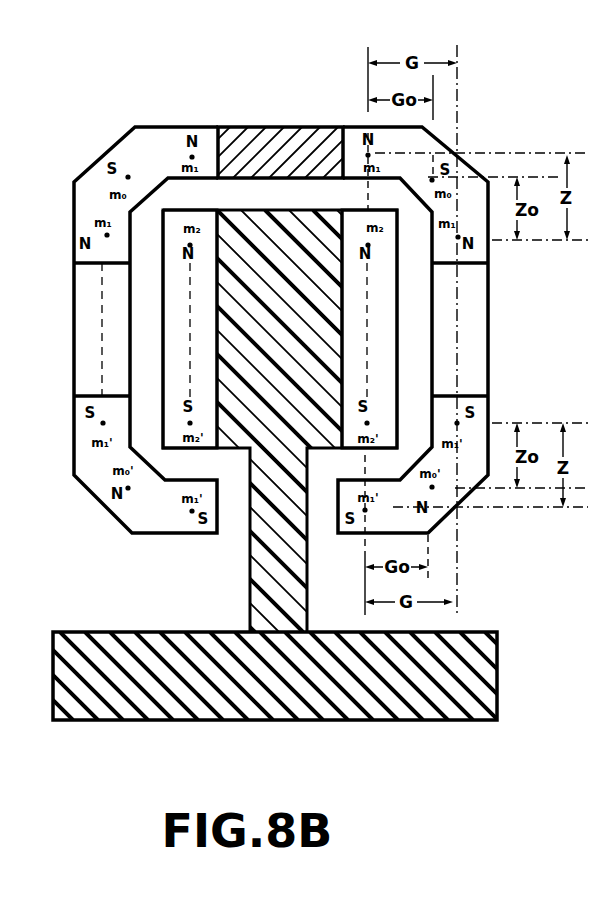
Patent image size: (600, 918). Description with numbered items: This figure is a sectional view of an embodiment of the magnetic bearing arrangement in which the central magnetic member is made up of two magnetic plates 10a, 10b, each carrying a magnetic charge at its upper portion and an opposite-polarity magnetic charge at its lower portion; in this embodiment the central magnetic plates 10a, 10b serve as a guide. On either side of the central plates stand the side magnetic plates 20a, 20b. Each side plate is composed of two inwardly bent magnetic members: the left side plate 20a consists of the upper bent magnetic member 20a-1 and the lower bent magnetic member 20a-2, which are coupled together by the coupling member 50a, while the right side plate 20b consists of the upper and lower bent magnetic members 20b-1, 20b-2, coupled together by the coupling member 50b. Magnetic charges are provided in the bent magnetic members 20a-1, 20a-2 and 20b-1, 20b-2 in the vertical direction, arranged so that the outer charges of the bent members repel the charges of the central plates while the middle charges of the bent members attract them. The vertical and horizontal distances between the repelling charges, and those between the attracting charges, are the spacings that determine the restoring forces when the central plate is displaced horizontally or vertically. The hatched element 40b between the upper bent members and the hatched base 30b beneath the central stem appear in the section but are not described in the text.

The magnetic plate 10a is at (145, 307).
The magnetic plate 10b is at (383, 332).
The side magnetic plate 20a is at (119, 317).
The bent magnetic member 20a-1 is at (147, 80).
The bent magnetic member 20a-2 is at (135, 517).
The side magnetic plate 20b is at (455, 312).
The bent magnetic member 20b-1 is at (572, 82).
The bent magnetic member 20b-2 is at (417, 522).
The base plate 30b is at (482, 677).
The permanent magnet 40b is at (288, 135).
The coupling member 50a is at (88, 375).
The coupling member 50b is at (465, 368).